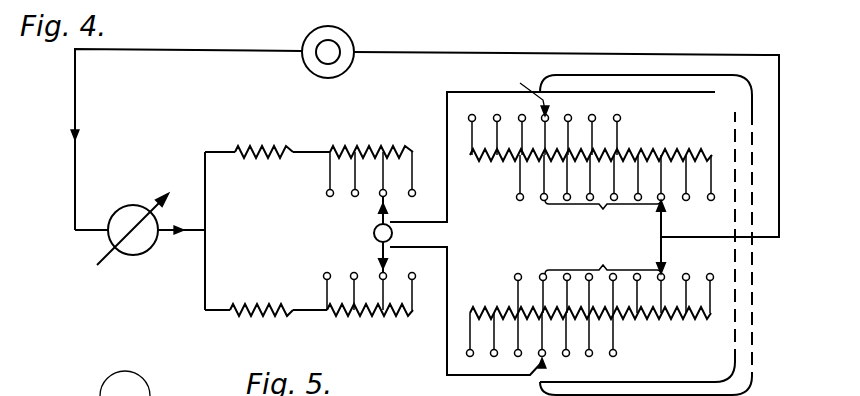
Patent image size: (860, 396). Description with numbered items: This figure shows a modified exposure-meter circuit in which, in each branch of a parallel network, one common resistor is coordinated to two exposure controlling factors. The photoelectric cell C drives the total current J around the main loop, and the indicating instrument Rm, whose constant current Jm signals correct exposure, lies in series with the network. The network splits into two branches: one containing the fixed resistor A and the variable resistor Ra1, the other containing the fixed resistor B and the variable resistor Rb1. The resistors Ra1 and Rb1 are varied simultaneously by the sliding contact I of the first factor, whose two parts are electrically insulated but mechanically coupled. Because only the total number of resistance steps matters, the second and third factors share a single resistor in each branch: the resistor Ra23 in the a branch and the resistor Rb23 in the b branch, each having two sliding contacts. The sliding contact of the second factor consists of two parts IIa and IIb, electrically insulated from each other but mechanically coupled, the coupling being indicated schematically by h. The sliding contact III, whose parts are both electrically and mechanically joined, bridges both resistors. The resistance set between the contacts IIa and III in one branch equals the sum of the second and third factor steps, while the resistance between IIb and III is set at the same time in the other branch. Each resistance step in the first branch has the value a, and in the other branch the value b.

The total current J is at (73, 151).
The photoelectric cell C is at (348, 49).
The instrument resistance Rm is at (138, 217).
The instrument current Jm is at (170, 235).
The fixed resistor A is at (265, 150).
The fixed resistor B is at (258, 315).
The variable resistor Ra1 is at (373, 156).
The variable resistor Rb1 is at (359, 314).
The sliding contact I is at (376, 231).
The common resistor Ra23 is at (641, 152).
The common resistor Rb23 is at (643, 316).
The sliding contact IIa is at (523, 93).
The sliding contact IIb is at (532, 376).
The sliding contact III is at (662, 237).
The mechanical coupling h is at (734, 95).